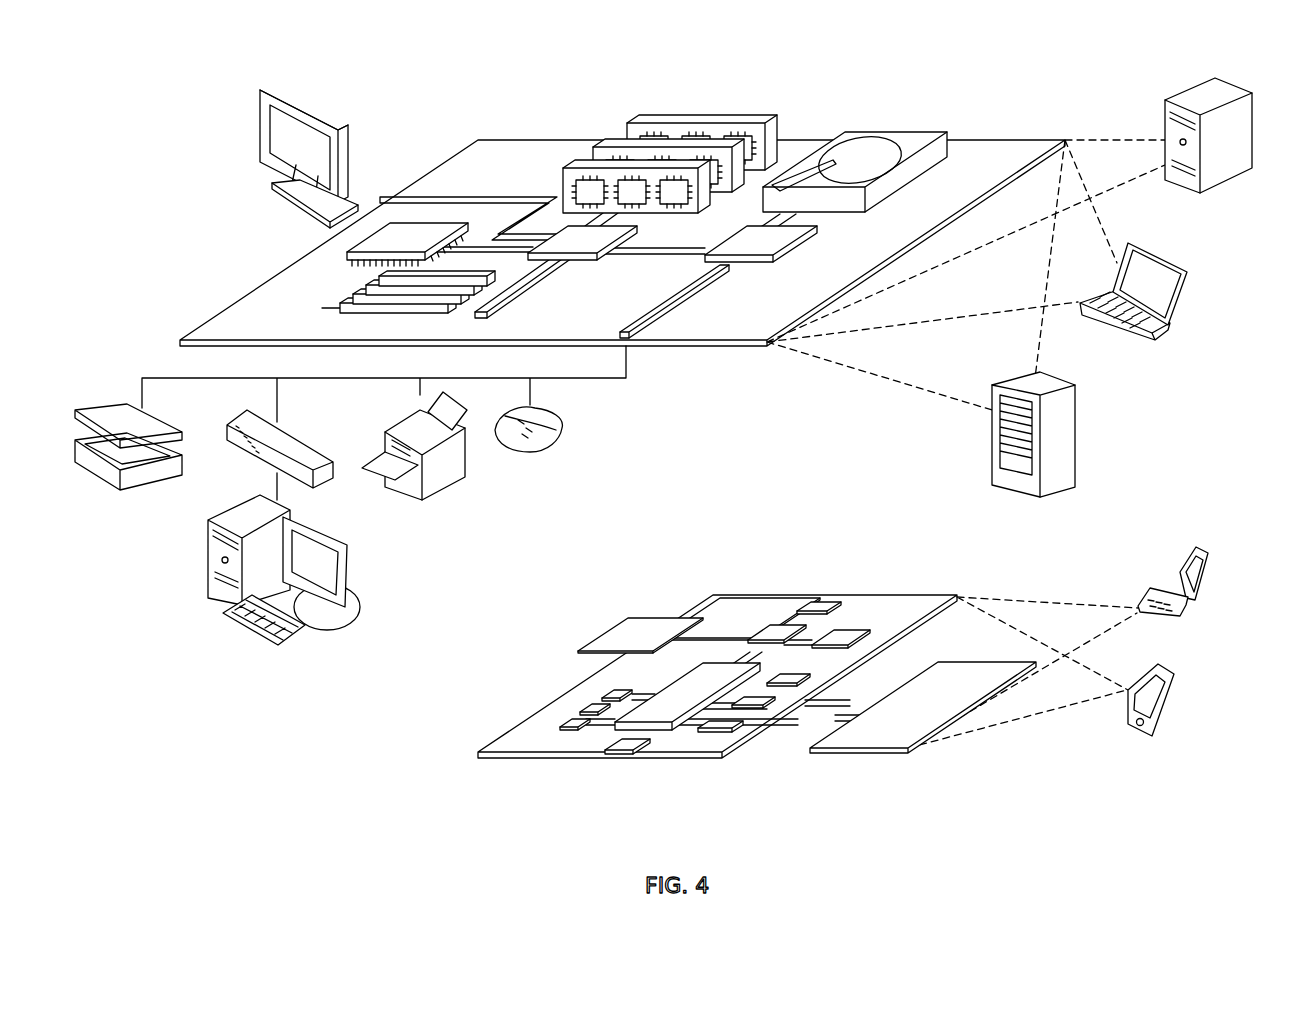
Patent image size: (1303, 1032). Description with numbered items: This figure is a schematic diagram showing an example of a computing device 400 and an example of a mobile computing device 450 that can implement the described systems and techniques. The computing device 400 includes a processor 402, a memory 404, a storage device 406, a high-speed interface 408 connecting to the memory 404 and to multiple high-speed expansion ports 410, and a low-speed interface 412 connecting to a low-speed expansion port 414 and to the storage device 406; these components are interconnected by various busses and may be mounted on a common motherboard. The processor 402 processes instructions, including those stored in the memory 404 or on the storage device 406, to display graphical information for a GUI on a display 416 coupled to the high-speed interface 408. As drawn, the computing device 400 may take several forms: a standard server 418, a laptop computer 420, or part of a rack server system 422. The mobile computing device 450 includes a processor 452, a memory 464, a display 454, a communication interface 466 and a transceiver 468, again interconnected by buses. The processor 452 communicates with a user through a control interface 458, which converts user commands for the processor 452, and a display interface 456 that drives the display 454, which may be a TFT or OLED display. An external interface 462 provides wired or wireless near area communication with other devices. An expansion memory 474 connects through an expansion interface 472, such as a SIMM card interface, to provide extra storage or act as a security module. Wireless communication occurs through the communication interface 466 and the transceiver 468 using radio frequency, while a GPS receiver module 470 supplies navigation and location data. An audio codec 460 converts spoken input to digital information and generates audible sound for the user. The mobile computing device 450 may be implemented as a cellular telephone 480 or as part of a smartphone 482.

The computing device 400 is at (458, 104).
The processor 402 is at (347, 242).
The memory 404 is at (697, 122).
The storage device 406 is at (892, 132).
The high-speed interface 408 is at (570, 267).
The high-speed expansion ports 410 is at (213, 310).
The low-speed interface 412 is at (793, 250).
The low-speed expansion port 414 is at (680, 308).
The display 416 is at (266, 96).
The standard server 418 is at (1160, 92).
The laptop computer 420 is at (1166, 252).
The rack server system 422 is at (1078, 440).
The mobile computing device 450 is at (676, 546).
The processor 452 is at (668, 681).
The display 454 is at (866, 755).
The display interface 456 is at (716, 733).
The control interface 458 is at (752, 710).
The audio codec 460 is at (785, 688).
The external interface 462 is at (620, 757).
The memory 464 is at (560, 721).
The communication interface 466 is at (777, 640).
The transceiver 468 is at (847, 630).
The GPS receiver module 470 is at (826, 603).
The expansion interface 472 is at (694, 614).
The expansion memory 474 is at (612, 640).
The cellular telephone 480 is at (1203, 562).
The smartphone 482 is at (1172, 680).